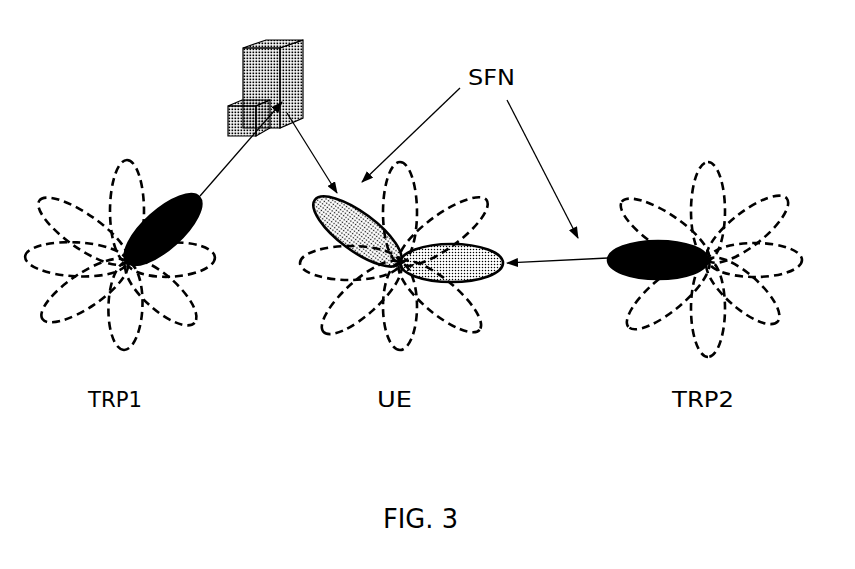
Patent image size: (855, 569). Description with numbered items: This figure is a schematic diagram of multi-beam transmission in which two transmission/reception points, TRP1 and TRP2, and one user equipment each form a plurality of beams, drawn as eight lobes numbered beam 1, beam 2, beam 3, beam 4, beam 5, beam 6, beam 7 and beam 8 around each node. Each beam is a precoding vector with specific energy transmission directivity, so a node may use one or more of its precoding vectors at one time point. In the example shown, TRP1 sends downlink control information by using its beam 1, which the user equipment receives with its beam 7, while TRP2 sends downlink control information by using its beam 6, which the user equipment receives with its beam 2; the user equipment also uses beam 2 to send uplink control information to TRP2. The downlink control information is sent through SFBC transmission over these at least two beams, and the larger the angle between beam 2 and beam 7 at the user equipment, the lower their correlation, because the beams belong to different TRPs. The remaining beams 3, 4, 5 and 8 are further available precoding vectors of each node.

The beam 1 is at (455, 230).
The beam 2 is at (464, 261).
The beam 3 is at (452, 295).
The beam 4 is at (416, 308).
The beam 5 is at (376, 296).
The beam 6 is at (366, 260).
The beam 7 is at (374, 232).
The beam 8 is at (417, 211).